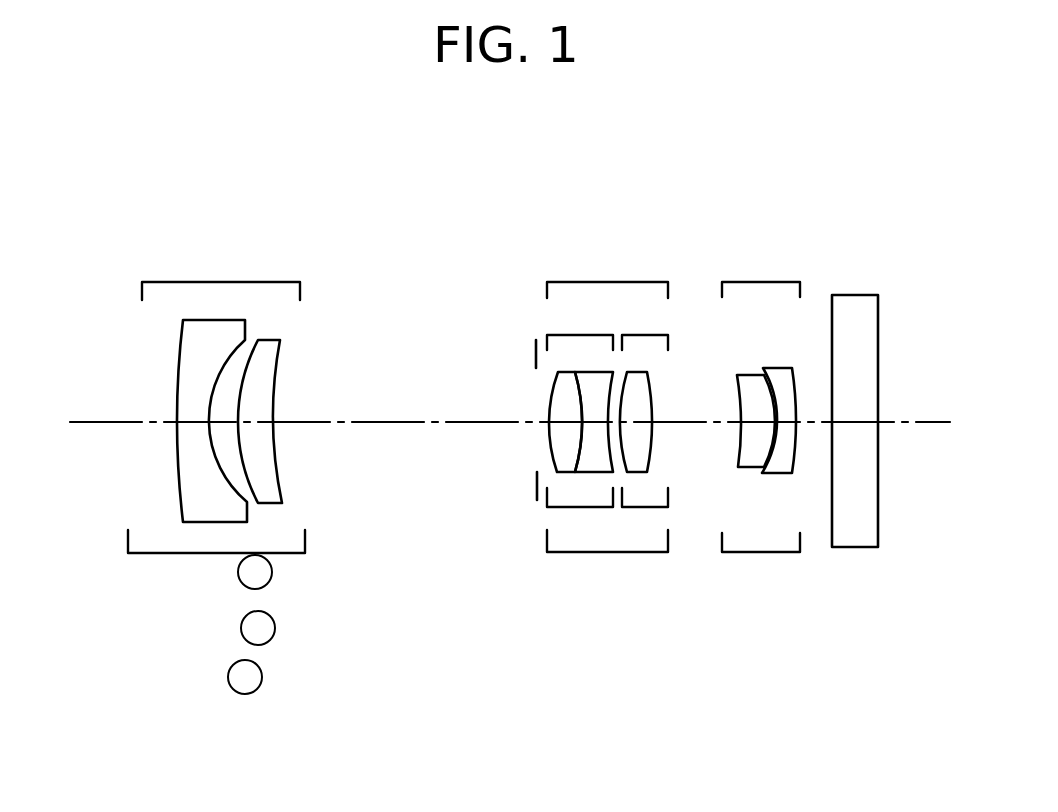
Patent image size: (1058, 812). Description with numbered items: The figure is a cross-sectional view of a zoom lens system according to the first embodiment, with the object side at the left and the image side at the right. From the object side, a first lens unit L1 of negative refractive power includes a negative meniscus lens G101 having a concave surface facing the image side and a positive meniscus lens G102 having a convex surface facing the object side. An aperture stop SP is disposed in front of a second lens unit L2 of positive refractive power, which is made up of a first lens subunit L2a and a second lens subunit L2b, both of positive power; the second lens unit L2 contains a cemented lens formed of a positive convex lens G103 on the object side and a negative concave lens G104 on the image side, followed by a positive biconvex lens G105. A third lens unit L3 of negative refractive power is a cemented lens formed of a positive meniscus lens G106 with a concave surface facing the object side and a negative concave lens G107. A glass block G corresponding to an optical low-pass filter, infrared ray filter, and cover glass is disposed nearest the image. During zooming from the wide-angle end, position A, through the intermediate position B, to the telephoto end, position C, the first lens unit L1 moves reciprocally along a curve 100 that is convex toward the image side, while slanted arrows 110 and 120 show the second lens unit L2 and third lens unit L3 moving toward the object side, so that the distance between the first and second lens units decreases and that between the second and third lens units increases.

The first lens unit L1 is at (221, 266).
The second lens unit L2 is at (607, 272).
The first lens subunit L2a is at (580, 405).
The second lens subunit L2b is at (647, 405).
The third lens unit L3 is at (761, 271).
The aperture stop SP is at (536, 347).
The glass block G is at (868, 295).
The negative meniscus lens G101 is at (193, 522).
The positive meniscus lens G102 is at (273, 503).
The positive convex lens G103 is at (567, 472).
The negative concave lens G104 is at (592, 472).
The positive biconvex lens G105 is at (637, 472).
The positive meniscus lens G106 is at (755, 467).
The negative concave lens G107 is at (772, 473).
The trajectory of the first lens unit 100 is at (220, 553).
The movement of the second lens unit 110 is at (608, 552).
The movement of the third lens unit 120 is at (760, 552).
The wide-angle end position A is at (255, 572).
The intermediate zoom position B is at (258, 628).
The telephoto end position C is at (245, 677).